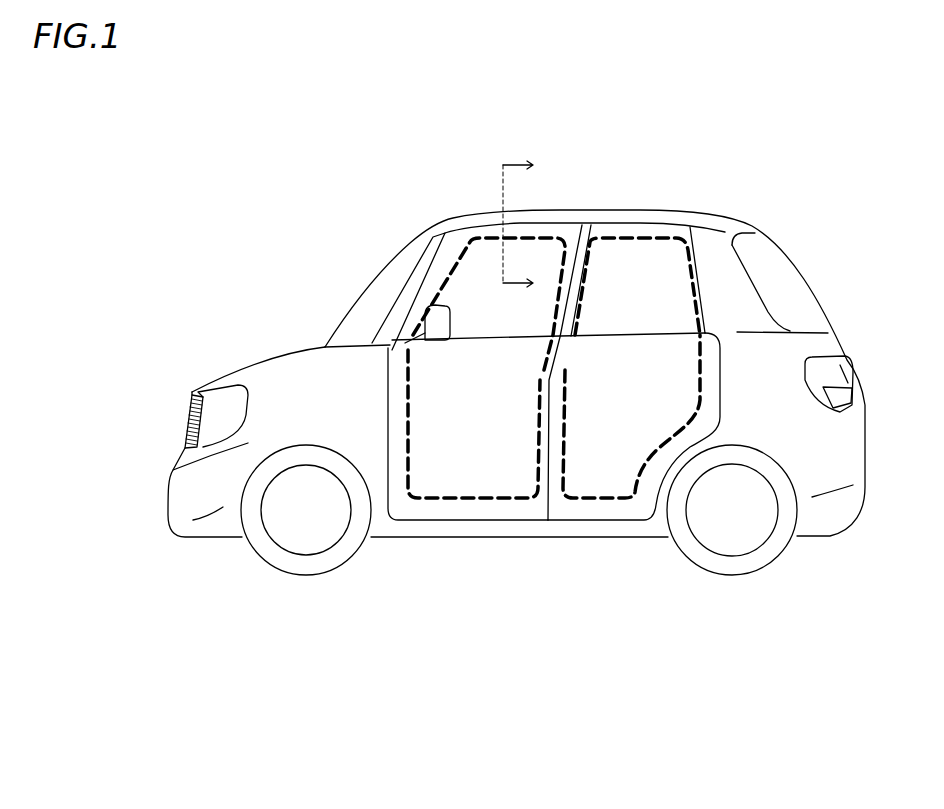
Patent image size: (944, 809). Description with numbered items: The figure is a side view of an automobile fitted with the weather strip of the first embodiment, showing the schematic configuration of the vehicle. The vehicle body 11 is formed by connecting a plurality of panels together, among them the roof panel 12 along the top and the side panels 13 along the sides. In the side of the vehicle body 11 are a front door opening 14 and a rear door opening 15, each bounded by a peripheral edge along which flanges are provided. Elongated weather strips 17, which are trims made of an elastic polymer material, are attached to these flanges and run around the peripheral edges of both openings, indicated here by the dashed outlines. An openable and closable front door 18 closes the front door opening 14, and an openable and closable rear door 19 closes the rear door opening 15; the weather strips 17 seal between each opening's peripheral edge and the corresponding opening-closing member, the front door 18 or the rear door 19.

The vehicle body 11 is at (516, 381).
The roof panel 12 is at (584, 226).
The side panel 13 is at (720, 272).
The front door opening 14 is at (467, 495).
The rear door opening 15 is at (634, 490).
The weather strip 17 is at (481, 237).
The front door 18 is at (407, 507).
The rear door 19 is at (570, 512).